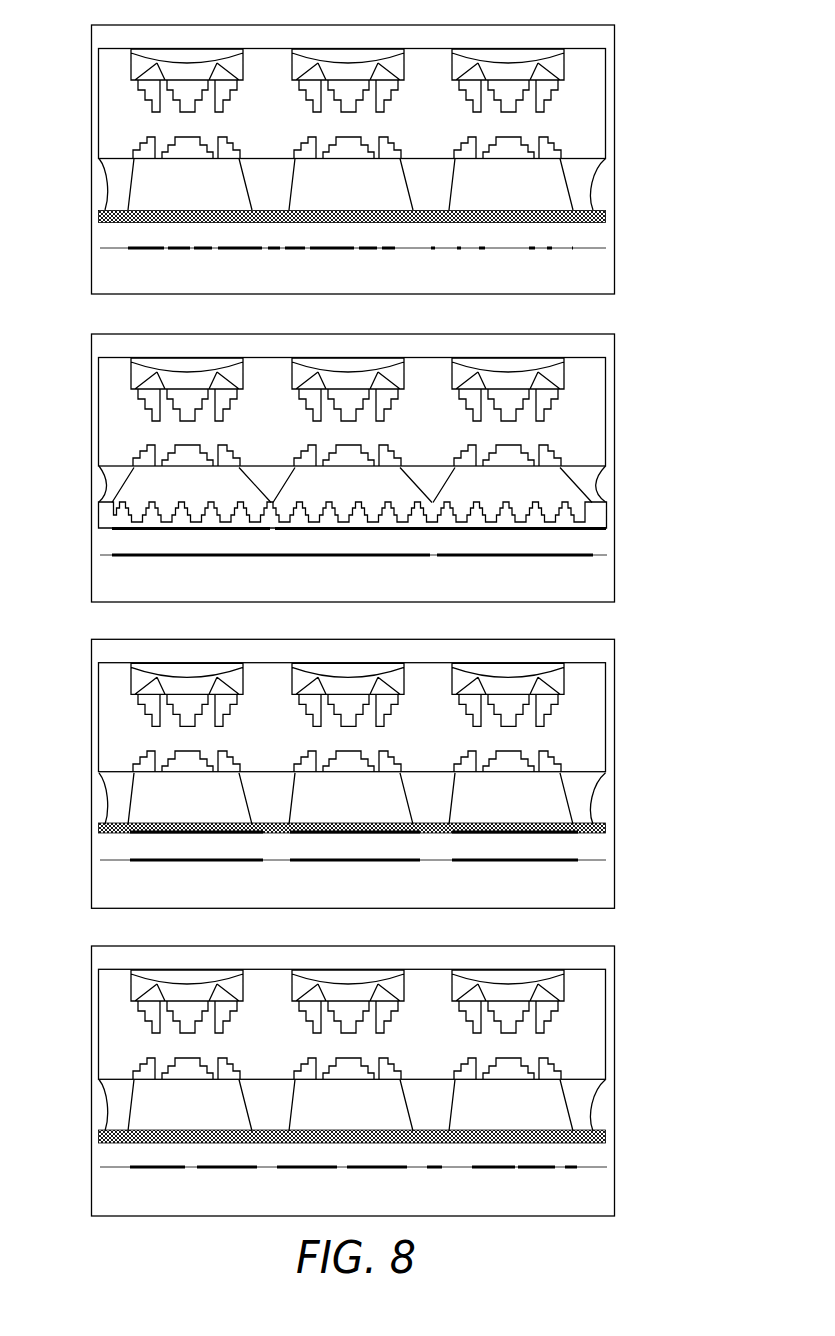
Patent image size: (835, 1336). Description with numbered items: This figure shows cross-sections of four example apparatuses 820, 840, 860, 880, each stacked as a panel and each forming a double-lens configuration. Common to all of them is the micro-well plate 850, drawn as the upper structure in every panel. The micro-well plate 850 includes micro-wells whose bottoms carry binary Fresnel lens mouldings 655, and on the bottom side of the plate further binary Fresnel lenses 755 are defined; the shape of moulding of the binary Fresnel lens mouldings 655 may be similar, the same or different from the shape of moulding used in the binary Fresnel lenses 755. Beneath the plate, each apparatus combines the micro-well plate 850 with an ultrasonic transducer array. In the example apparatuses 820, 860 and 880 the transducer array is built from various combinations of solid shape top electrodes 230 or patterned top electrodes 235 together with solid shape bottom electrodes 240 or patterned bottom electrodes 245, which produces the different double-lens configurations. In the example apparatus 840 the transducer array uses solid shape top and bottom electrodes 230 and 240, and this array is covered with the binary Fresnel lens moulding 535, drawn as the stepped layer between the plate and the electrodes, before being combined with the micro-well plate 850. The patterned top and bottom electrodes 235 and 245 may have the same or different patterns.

The example apparatus 820 is at (648, 32).
The example apparatus 840 is at (648, 341).
The example apparatus 860 is at (648, 646).
The example apparatus 880 is at (648, 953).
The micro-well plate 850 is at (91, 96).
The binary Fresnel lens mouldings 655 is at (460, 117).
The binary Fresnel lenses 755 is at (475, 185).
The binary Fresnel lens moulding 535 is at (380, 488).
The patterned top electrodes 235 is at (510, 211).
The solid shape top electrodes 230 is at (510, 520).
The solid shape bottom electrodes 240 is at (513, 560).
The patterned bottom electrodes 245 is at (510, 249).